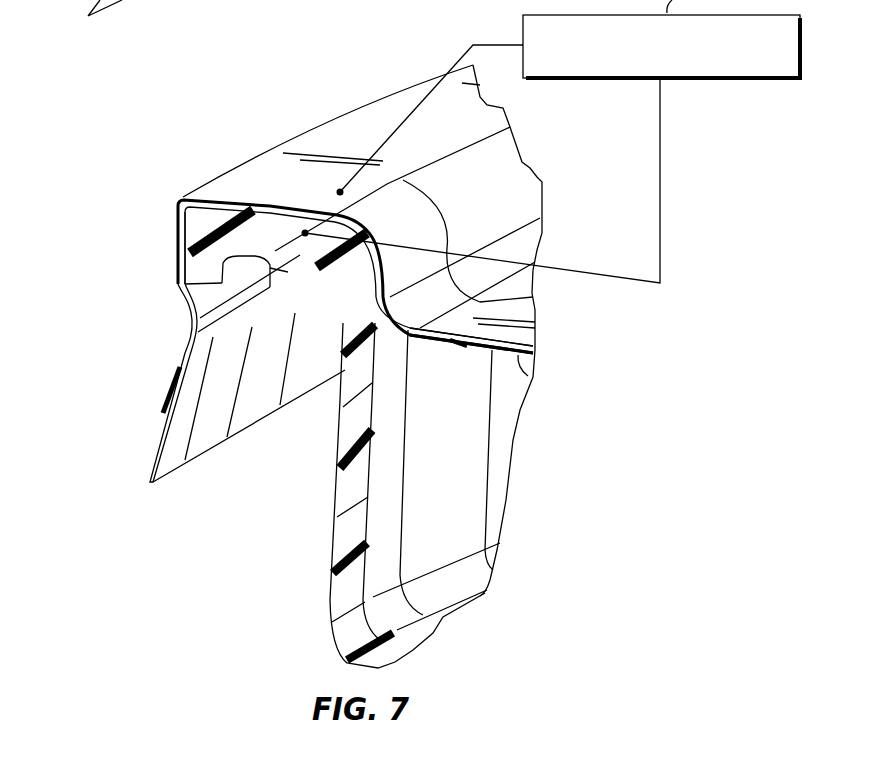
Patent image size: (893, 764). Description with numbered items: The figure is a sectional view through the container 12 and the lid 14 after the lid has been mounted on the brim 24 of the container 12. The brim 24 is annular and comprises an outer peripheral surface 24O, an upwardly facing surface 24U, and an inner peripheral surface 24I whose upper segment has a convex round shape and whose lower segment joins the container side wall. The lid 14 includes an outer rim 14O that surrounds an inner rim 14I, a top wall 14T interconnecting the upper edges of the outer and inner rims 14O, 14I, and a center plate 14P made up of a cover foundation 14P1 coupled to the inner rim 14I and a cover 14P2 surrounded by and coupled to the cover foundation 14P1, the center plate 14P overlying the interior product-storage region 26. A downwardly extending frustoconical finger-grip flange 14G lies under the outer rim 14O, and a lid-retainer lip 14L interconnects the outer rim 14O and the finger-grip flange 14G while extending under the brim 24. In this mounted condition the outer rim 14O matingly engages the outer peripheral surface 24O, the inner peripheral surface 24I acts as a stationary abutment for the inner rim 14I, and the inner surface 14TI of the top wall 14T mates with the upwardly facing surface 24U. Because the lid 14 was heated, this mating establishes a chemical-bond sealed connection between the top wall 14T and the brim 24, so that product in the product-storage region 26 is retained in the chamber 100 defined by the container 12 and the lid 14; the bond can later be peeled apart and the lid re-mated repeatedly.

The container 12 is at (328, 593).
The lid 14 is at (357, 112).
The top wall 14T is at (243, 178).
The inner surface of top wall 14TI is at (345, 208).
The inner rim 14I is at (473, 209).
The outer rim 14O is at (177, 222).
The lid-retainer lip 14L is at (188, 323).
The finger-grip flange 14G is at (152, 450).
The center plate 14P is at (508, 338).
The cover foundation 14P1 is at (417, 310).
The cover 14P2 is at (518, 355).
The brim 24 is at (288, 283).
The outer peripheral surface 24O is at (185, 240).
The upwardly facing surface 24U is at (283, 212).
The inner peripheral surface 24I is at (533, 318).
The interior product-storage region 26 is at (463, 507).
The chamber 100 is at (455, 580).